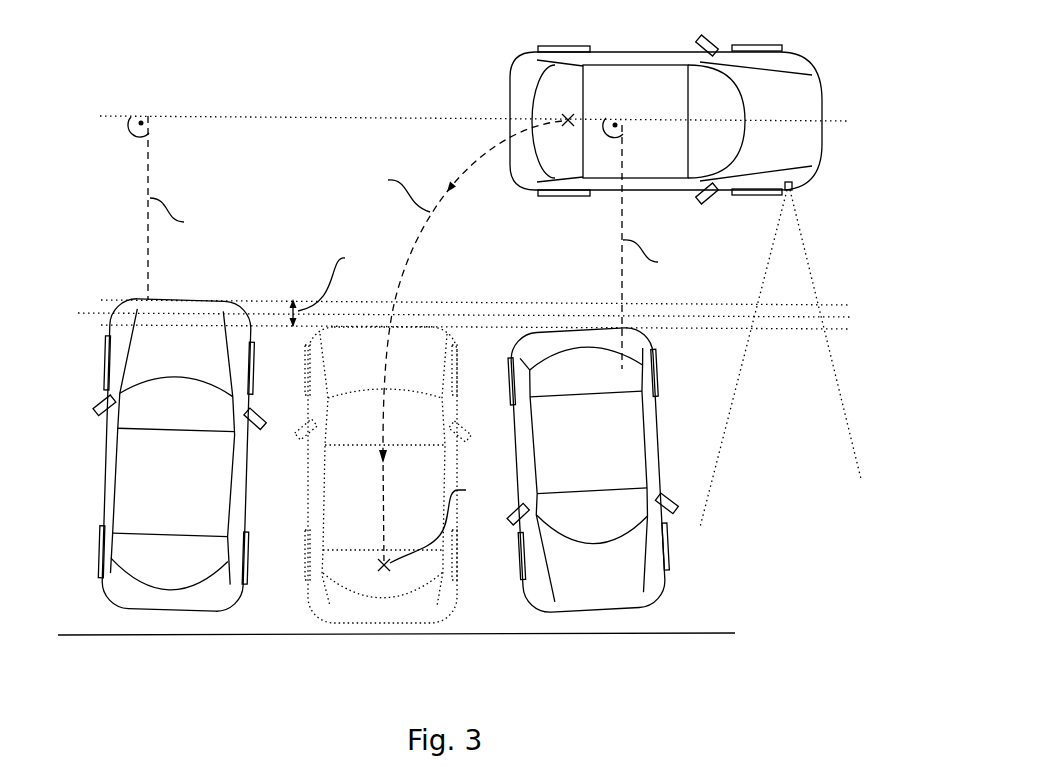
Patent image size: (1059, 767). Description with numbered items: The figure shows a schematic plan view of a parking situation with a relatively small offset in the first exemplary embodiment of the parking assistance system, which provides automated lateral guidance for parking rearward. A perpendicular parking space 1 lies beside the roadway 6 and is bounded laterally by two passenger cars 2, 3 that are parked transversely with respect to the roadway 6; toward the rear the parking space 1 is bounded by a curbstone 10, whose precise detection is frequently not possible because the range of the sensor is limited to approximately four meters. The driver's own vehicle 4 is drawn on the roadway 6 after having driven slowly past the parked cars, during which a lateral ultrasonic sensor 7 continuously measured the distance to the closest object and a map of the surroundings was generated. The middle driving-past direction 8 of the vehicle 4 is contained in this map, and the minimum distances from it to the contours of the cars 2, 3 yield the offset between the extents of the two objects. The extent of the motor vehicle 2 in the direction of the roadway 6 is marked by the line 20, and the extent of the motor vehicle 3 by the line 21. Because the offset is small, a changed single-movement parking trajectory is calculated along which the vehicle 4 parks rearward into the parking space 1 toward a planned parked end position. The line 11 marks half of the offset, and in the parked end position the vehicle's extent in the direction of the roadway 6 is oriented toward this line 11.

The perpendicular parking space 1 is at (458, 620).
The passenger car 2 is at (135, 612).
The passenger car 3 is at (660, 445).
The vehicle 4 is at (510, 92).
The roadway 6 is at (445, 343).
The lateral ultrasonic sensor 7 is at (788, 192).
The middle driving-past direction 8 is at (258, 115).
The curbstone 10 is at (290, 636).
The line marking half the offset 11 is at (455, 315).
The line marking the extent of motor vehicle 2 20 is at (258, 301).
The line marking the extent of motor vehicle 3 21 is at (692, 330).